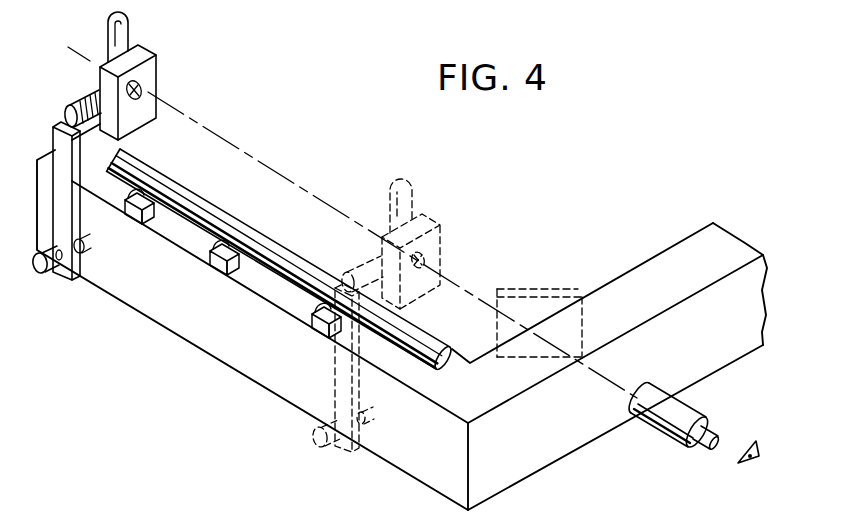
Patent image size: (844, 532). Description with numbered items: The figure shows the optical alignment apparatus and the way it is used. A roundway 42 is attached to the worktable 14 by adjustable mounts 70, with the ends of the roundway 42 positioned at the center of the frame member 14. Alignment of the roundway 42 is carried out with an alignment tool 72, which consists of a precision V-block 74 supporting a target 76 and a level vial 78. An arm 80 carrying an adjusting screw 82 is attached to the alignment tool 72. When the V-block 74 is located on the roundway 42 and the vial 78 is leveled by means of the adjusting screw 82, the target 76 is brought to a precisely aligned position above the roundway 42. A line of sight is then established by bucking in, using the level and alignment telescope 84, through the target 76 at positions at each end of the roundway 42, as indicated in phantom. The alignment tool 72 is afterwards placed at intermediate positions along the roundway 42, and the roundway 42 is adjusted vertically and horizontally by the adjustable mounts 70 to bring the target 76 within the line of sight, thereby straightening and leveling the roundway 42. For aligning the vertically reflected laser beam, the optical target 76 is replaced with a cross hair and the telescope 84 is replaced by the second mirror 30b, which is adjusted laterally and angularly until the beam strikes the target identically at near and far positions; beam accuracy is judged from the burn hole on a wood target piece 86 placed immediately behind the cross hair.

The worktable 14 is at (584, 458).
The roundway 42 is at (437, 366).
The precision V-block 74 is at (110, 160).
The alignment tool 72 is at (157, 94).
The target 76 is at (148, 90).
The wood target piece 86 is at (131, 23).
The level vial 78 is at (88, 103).
The arm 80 is at (76, 252).
The adjusting screw 82 is at (47, 268).
The adjustable mounts 70 is at (218, 259).
The second mirror 30b is at (548, 289).
The level and alignment telescope 84 is at (678, 413).